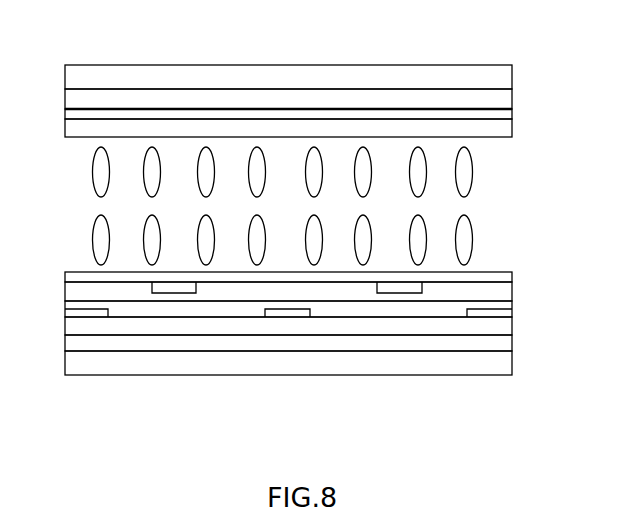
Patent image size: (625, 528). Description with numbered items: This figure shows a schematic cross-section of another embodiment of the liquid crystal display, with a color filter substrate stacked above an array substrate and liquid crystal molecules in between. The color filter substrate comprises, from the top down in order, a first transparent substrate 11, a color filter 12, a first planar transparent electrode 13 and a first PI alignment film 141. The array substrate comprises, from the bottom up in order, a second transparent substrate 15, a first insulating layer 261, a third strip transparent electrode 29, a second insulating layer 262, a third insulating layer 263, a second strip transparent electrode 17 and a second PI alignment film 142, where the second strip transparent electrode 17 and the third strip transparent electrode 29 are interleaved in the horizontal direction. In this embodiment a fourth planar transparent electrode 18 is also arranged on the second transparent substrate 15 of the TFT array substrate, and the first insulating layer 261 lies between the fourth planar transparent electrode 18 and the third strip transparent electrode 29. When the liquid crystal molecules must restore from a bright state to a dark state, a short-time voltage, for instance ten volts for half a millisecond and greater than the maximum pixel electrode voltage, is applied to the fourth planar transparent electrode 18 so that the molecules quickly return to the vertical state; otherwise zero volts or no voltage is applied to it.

The first transparent substrate 11 is at (223, 78).
The color filter 12 is at (308, 100).
The first planar transparent electrode 13 is at (362, 113).
The first PI alignment film 141 is at (417, 127).
The second PI alignment film 142 is at (443, 278).
The third insulating layer 263 is at (340, 290).
The second strip transparent electrode 17 is at (395, 290).
The second insulating layer 262 is at (210, 308).
The third strip transparent electrode 29 is at (280, 315).
The first insulating layer 261 is at (155, 327).
The fourth planar transparent electrode 18 is at (117, 340).
The second transparent substrate 15 is at (78, 360).